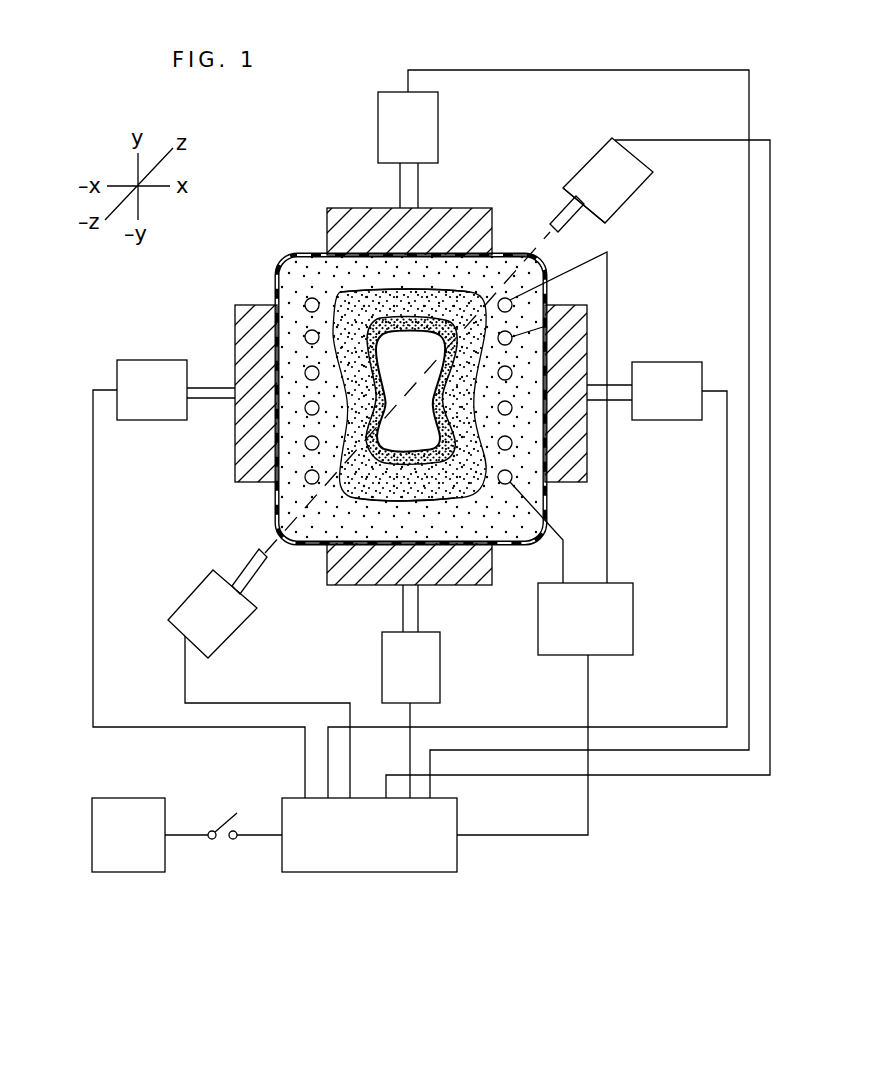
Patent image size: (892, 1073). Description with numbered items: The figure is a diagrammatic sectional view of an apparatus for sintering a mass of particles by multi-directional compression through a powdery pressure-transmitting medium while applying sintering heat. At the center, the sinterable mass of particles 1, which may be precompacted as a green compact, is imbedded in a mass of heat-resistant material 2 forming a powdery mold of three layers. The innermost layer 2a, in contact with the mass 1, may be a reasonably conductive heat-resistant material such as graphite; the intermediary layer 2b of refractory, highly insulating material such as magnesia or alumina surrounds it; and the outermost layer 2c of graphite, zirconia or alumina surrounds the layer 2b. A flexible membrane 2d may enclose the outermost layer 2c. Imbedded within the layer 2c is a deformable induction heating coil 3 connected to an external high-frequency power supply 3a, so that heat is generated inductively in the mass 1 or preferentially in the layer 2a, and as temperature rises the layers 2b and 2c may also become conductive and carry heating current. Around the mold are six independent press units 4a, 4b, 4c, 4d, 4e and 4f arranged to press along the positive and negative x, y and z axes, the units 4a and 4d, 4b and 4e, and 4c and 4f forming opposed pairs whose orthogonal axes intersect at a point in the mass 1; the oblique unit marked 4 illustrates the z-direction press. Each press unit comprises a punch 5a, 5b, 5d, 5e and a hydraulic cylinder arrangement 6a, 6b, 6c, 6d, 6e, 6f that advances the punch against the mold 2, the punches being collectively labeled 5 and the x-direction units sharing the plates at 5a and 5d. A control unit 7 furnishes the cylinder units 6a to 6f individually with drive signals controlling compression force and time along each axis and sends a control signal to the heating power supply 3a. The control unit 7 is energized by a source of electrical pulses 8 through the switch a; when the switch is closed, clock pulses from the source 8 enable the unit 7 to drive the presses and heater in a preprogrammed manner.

The sinterable mass of particles 1 is at (414, 383).
The mass of heat-resistant material 2 is at (364, 418).
The innermost layer 2a is at (363, 318).
The intermediary layer 2b is at (378, 498).
The outermost layer 2c is at (313, 546).
The flexible membrane 2d is at (527, 250).
The induction heating coil 3 is at (305, 325).
The high-frequency power supply 3a is at (633, 620).
The vibrator 4 is at (578, 468).
The press unit 4a is at (200, 347).
The press unit 4b is at (461, 625).
The press unit 4c is at (310, 644).
The press unit 4d is at (660, 337).
The press unit 4e is at (494, 163).
The press unit 4f is at (642, 127).
The heater coils 5 is at (543, 310).
The punch 5a is at (235, 462).
The punch 5b is at (483, 586).
The punch 5d is at (587, 468).
The punch 5e is at (340, 207).
The hydraulic cylinder arrangement 6a is at (133, 420).
The hydraulic cylinder arrangement 6b is at (440, 672).
The hydraulic cylinder arrangement 6c is at (238, 632).
The hydraulic cylinder arrangement 6d is at (690, 362).
The hydraulic cylinder arrangement 6e is at (438, 110).
The hydraulic cylinder arrangement 6f is at (632, 205).
The control unit 7 is at (378, 872).
The source of electrical pulses 8 is at (137, 872).
The switch a is at (224, 846).